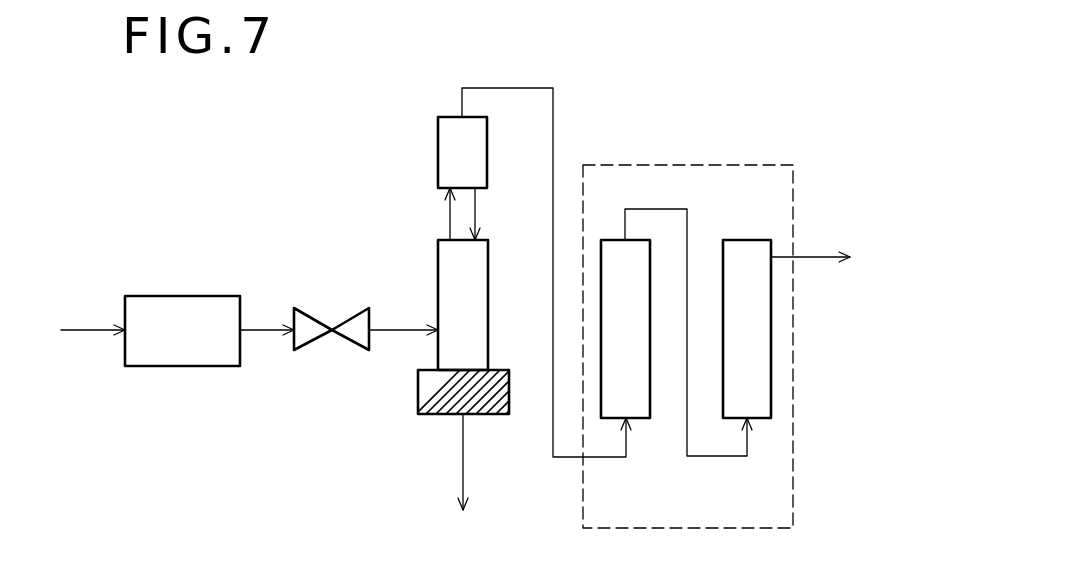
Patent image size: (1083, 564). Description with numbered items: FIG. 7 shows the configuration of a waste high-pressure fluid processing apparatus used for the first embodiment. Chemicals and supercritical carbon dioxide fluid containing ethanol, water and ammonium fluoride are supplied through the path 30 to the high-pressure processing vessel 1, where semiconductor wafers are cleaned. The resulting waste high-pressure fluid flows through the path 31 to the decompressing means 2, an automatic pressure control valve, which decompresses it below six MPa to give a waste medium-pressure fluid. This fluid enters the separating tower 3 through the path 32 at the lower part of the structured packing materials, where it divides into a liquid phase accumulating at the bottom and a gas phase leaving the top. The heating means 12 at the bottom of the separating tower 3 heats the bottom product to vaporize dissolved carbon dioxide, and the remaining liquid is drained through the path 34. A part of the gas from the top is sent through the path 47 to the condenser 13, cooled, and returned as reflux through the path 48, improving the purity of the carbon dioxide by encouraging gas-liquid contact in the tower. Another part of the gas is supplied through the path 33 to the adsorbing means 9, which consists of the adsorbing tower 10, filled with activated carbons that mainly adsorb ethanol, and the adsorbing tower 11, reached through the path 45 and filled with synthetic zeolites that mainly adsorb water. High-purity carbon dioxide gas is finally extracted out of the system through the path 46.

The high-pressure processing vessel 1 is at (176, 296).
The decompressing means 2 is at (323, 328).
The separating tower 3 is at (438, 252).
The adsorbing means 9 is at (795, 489).
The adsorbing tower 10 is at (607, 240).
The adsorbing tower 11 is at (744, 240).
The heating means 12 is at (418, 394).
The condenser 13 is at (438, 149).
The path 30 is at (82, 329).
The path 31 is at (265, 329).
The path 32 is at (393, 329).
The path 33 is at (505, 88).
The path 34 is at (463, 465).
The path 45 is at (718, 457).
The path 46 is at (820, 257).
The path 47 is at (445, 208).
The path 48 is at (479, 208).